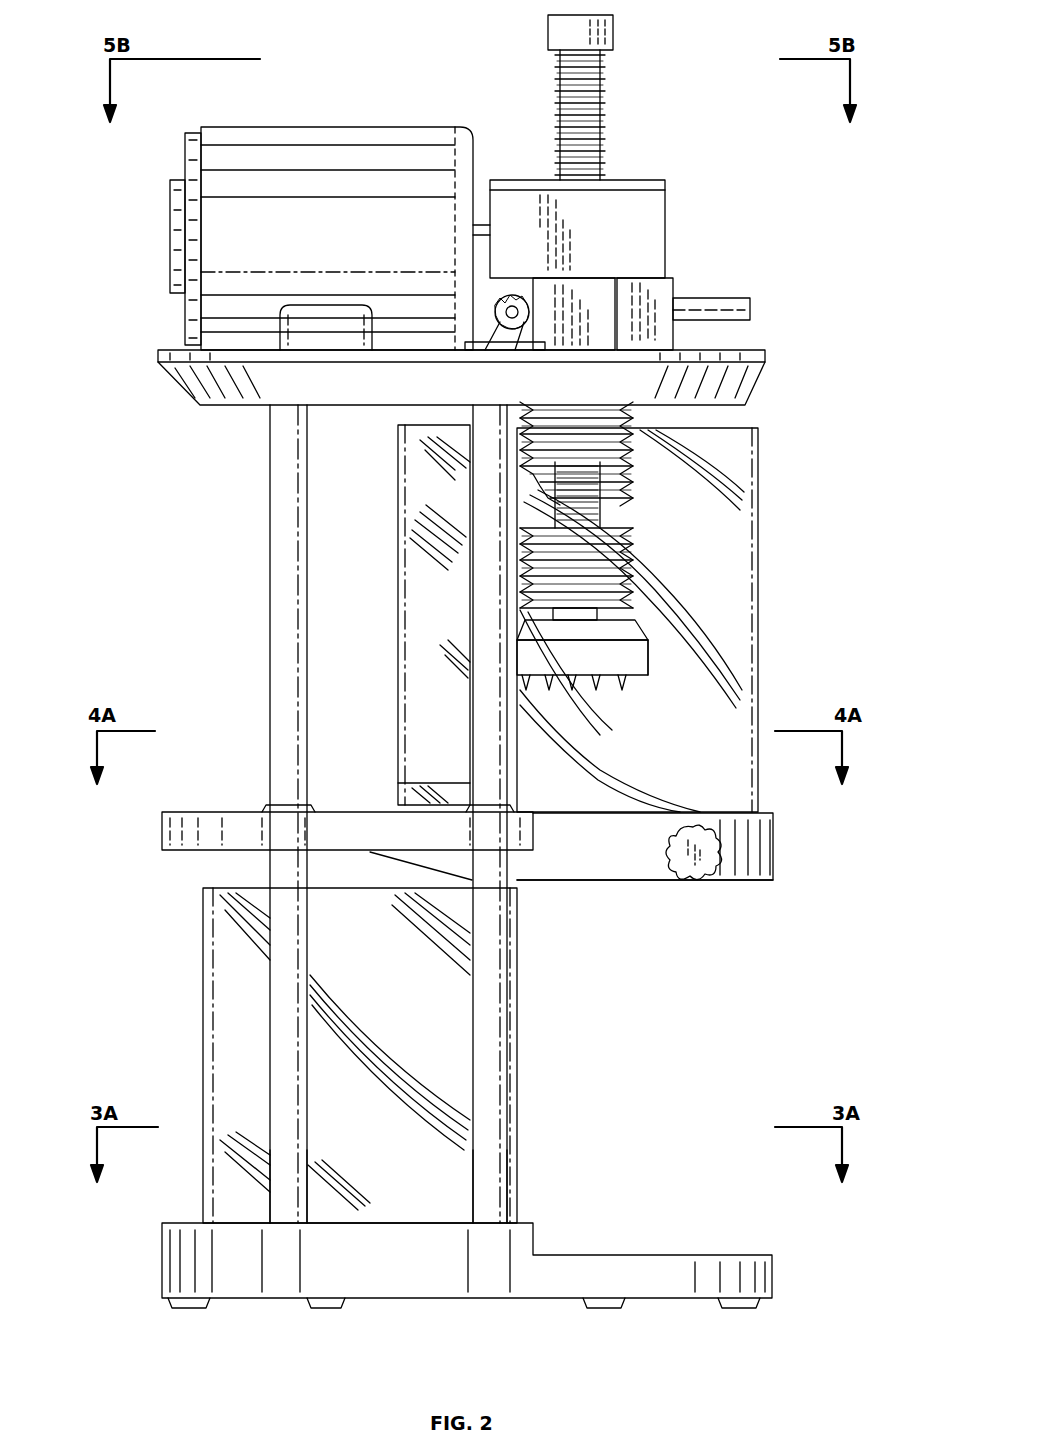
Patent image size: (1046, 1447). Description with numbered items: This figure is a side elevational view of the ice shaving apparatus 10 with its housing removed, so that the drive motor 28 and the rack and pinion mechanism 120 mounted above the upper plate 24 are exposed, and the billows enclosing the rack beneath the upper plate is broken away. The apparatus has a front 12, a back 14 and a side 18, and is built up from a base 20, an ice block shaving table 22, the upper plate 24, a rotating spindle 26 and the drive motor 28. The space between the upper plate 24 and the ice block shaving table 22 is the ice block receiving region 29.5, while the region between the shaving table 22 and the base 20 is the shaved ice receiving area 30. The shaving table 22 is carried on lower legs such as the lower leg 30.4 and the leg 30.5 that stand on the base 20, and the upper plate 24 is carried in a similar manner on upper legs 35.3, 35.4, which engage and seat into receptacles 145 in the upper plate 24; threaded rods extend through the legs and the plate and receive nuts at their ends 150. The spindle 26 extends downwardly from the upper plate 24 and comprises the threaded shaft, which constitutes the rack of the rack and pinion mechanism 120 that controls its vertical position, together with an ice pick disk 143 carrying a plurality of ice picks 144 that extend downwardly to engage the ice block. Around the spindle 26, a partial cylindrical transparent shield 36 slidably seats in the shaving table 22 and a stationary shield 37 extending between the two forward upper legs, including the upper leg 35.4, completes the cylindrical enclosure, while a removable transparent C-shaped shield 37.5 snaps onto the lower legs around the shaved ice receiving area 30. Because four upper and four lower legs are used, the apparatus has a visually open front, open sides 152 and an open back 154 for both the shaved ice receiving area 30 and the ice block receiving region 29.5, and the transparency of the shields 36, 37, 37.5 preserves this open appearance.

The ice shaving apparatus 10 is at (230, 462).
The front 12 is at (775, 832).
The back 14 is at (162, 826).
The side 18 is at (415, 1272).
The base 20 is at (772, 1272).
The ice block shaving table 22 is at (773, 880).
The upper plate 24 is at (765, 385).
The rotating spindle 26 is at (645, 630).
The drive motor 28 is at (245, 127).
The ice block receiving region 29.5 is at (680, 813).
The shaved ice receiving area 30 is at (598, 792).
The lower leg 30.4 is at (292, 1200).
The post lower end 30.5 is at (485, 1202).
The upper leg 35.3 is at (285, 603).
The upper leg 35.4 is at (485, 650).
The partial cylindrical transparent shield 36 is at (758, 533).
The stationary shield 37 is at (412, 498).
The removable transparent C-shaped shield 37.5 is at (203, 985).
The rack and pinion mechanism 120 is at (483, 272).
The ice pick disk 143 is at (633, 663).
The ice picks 144 is at (572, 680).
The receptacles 145 is at (633, 500).
The ends of threaded rods 150 is at (782, 640).
The sides 152 is at (335, 670).
The back 154 is at (190, 520).